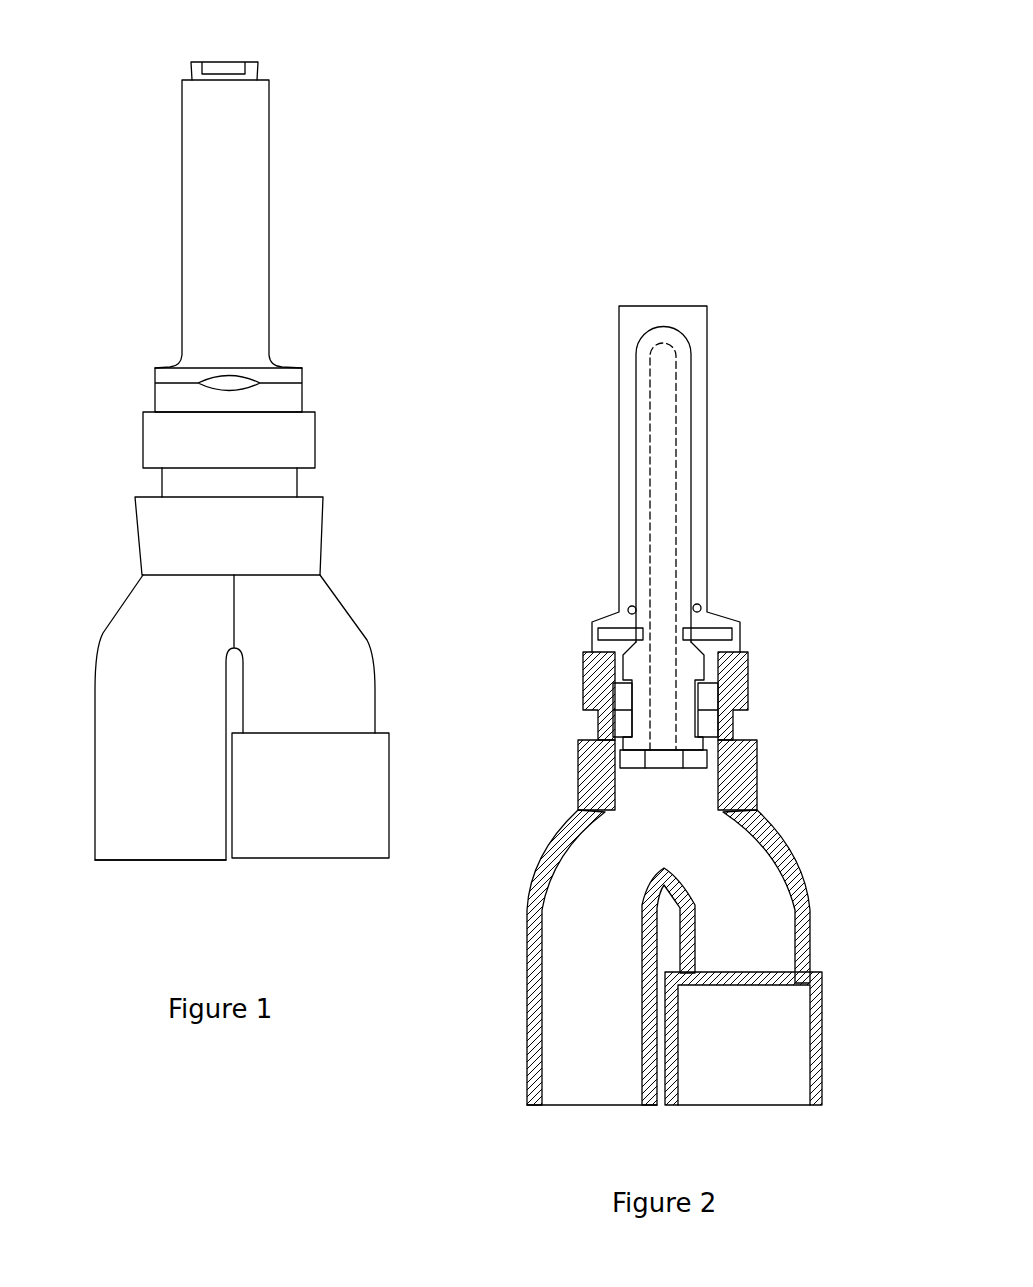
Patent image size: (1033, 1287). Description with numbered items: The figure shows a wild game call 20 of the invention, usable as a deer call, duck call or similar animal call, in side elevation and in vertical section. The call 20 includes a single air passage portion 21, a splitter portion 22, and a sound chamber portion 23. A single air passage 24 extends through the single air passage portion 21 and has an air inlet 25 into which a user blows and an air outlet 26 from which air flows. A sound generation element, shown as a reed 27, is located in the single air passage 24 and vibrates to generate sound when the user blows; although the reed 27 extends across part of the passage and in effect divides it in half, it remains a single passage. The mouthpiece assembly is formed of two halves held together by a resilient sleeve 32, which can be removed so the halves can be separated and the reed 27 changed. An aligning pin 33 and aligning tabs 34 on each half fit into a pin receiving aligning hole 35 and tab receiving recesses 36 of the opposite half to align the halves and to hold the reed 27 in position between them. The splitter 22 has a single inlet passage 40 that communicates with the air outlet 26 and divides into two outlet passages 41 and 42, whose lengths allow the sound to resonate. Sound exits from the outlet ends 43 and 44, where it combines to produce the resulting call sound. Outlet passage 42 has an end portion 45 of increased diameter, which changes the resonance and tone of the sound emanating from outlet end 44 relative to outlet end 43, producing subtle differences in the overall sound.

In FIG. 1, the wild game call 20 is at (117, 90).
In FIG. 2, the wild game call 20 is at (590, 298).
In FIG. 1, the single air passage portion 21 is at (130, 240).
In FIG. 2, the single air passage portion 21 is at (590, 438).
In FIG. 1, the splitter portion 22 is at (110, 592).
In FIG. 2, the splitter portion 22 is at (547, 806).
In FIG. 1, the sound chamber portion 23 is at (78, 766).
In FIG. 2, the sound chamber portion 23 is at (507, 1004).
In FIG. 2, the single air passage 24 is at (663, 392).
In FIG. 1, the air inlet 25 is at (224, 62).
In FIG. 2, the air outlet 26 is at (668, 762).
In FIG. 2, the reed 27 is at (690, 478).
In FIG. 1, the resilient sleeve 32 is at (268, 183).
In FIG. 2, the aligning pin 33 is at (630, 608).
In FIG. 2, the aligning tabs 34 is at (585, 674).
In FIG. 2, the pin receiving aligning hole 35 is at (699, 606).
In FIG. 2, the tab receiving recesses 36 is at (627, 727).
In FIG. 2, the single inlet passage 40 is at (728, 808).
In FIG. 2, the outlet passage 41 is at (598, 930).
In FIG. 2, the outlet passage 42 is at (745, 897).
In FIG. 1, the outlet end 43 is at (146, 860).
In FIG. 2, the outlet end 43 is at (568, 1105).
In FIG. 1, the outlet end 44 is at (245, 860).
In FIG. 2, the outlet end 44 is at (752, 1105).
In FIG. 2, the end portion of increased diameter 45 is at (795, 1024).